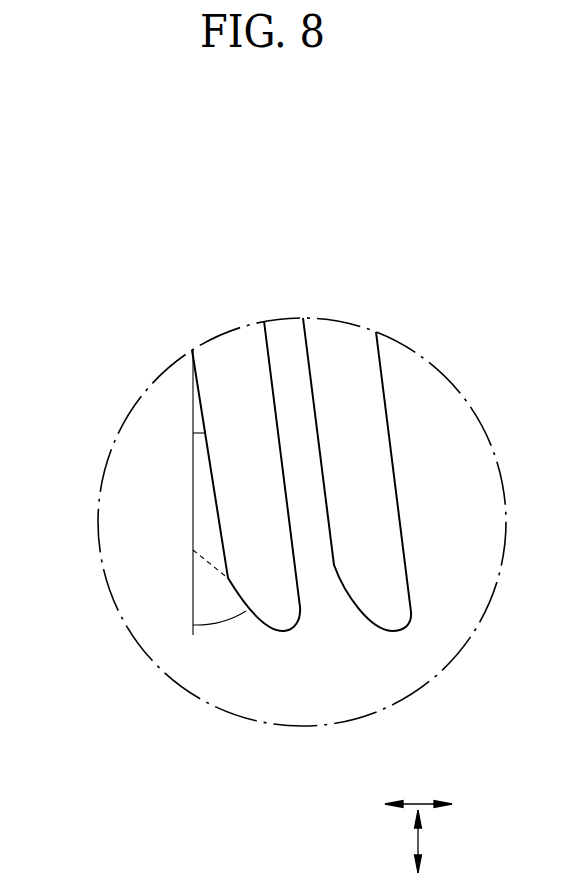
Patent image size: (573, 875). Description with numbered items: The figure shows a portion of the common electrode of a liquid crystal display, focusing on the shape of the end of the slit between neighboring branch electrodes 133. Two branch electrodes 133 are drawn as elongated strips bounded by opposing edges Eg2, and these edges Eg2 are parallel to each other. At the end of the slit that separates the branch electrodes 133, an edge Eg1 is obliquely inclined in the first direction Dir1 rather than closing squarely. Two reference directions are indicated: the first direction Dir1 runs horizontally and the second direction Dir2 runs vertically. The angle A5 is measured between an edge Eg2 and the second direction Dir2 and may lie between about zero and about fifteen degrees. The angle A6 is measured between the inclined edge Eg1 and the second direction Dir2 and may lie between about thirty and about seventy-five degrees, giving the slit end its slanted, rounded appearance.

The branch electrodes 133 is at (327, 513).
The angle A5 is at (214, 492).
The angle A6 is at (219, 598).
The edge Eg1 is at (256, 617).
The edges Eg2 is at (275, 421).
The first direction Dir1 is at (441, 805).
The second direction Dir2 is at (443, 841).